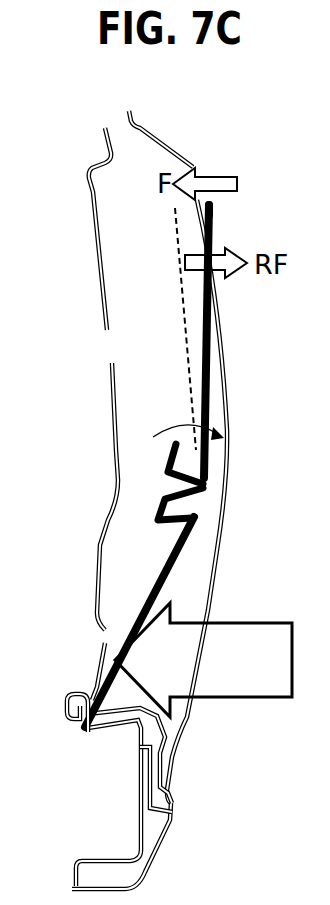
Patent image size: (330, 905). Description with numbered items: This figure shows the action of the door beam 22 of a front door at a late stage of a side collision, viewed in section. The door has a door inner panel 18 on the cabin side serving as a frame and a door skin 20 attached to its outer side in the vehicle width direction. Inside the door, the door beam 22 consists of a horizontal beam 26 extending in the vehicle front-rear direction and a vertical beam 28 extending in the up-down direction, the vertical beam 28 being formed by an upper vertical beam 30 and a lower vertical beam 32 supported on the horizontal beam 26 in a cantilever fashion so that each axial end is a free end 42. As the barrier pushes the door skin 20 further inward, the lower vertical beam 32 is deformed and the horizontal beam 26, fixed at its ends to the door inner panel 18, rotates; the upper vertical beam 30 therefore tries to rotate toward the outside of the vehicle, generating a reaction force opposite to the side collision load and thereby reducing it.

The door inner panel 18 is at (112, 395).
The door skin 20 is at (229, 451).
The door beam 22 is at (213, 497).
The horizontal beam 26 is at (154, 481).
The vertical beam 28 is at (216, 386).
The upper vertical beam 30 is at (211, 333).
The lower vertical beam 32 is at (162, 580).
The free end 42 is at (216, 203).